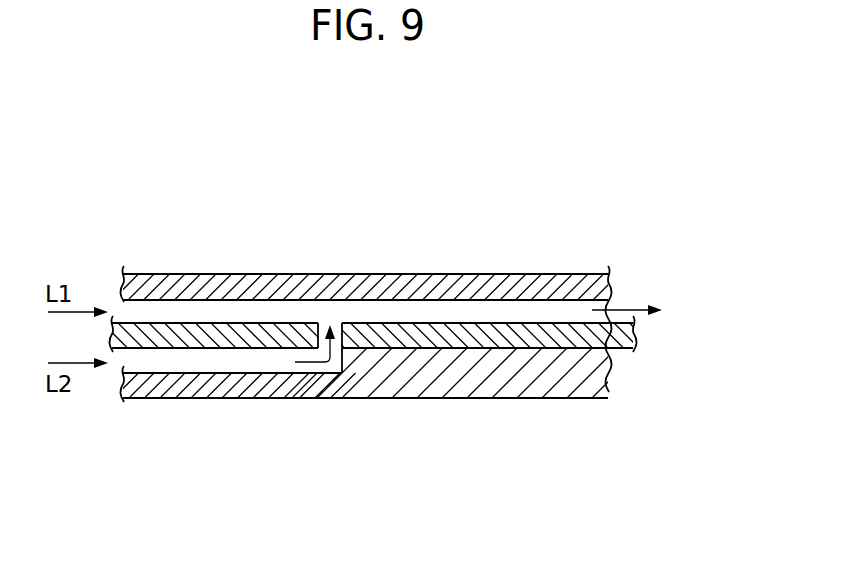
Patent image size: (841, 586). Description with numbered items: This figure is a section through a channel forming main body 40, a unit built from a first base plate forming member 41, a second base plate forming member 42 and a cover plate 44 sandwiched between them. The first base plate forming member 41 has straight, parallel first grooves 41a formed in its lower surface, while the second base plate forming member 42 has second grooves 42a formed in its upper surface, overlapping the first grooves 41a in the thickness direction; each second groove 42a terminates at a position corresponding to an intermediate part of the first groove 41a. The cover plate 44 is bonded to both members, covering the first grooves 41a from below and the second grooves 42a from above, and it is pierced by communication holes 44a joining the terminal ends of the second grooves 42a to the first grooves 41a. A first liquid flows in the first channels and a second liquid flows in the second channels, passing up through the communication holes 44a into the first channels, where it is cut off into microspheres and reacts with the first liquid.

The channel forming main body 40 is at (713, 265).
The first base plate forming member 41 is at (598, 290).
The first grooves 41a is at (198, 310).
The cover plate 44 is at (613, 337).
The communication holes 44a is at (333, 325).
The second base plate forming member 42 is at (590, 378).
The second grooves 42a is at (213, 360).